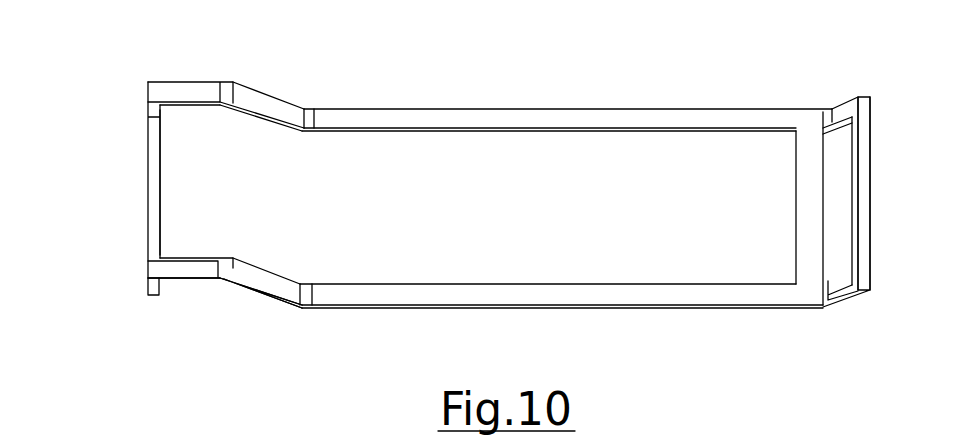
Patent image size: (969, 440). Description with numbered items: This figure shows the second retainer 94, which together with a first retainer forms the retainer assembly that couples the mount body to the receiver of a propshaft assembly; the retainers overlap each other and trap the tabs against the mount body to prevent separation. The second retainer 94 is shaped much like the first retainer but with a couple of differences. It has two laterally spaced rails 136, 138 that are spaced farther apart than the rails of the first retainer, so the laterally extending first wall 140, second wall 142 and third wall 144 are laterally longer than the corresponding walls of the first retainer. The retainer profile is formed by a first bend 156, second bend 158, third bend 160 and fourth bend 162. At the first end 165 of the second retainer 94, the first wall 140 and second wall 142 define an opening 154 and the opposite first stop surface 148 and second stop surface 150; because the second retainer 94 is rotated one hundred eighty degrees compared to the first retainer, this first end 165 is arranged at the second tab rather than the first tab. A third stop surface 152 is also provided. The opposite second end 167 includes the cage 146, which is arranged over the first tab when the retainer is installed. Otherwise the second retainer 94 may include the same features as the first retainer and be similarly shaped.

The second retainer 94 is at (122, 201).
The rail 136 is at (510, 115).
The rail 138 is at (502, 284).
The first wall 140 is at (865, 192).
The second wall 142 is at (797, 187).
The third wall 144 is at (148, 133).
The cage 146 is at (192, 288).
The first stop surface 148 is at (832, 147).
The second stop surface 150 is at (815, 157).
The third stop surface 152 is at (162, 188).
The opening 154 is at (850, 250).
The first bend 156 is at (825, 110).
The second bend 158 is at (305, 111).
The third bend 160 is at (227, 93).
The fourth bend 162 is at (153, 97).
The first end 165 is at (878, 269).
The second end 167 is at (128, 238).